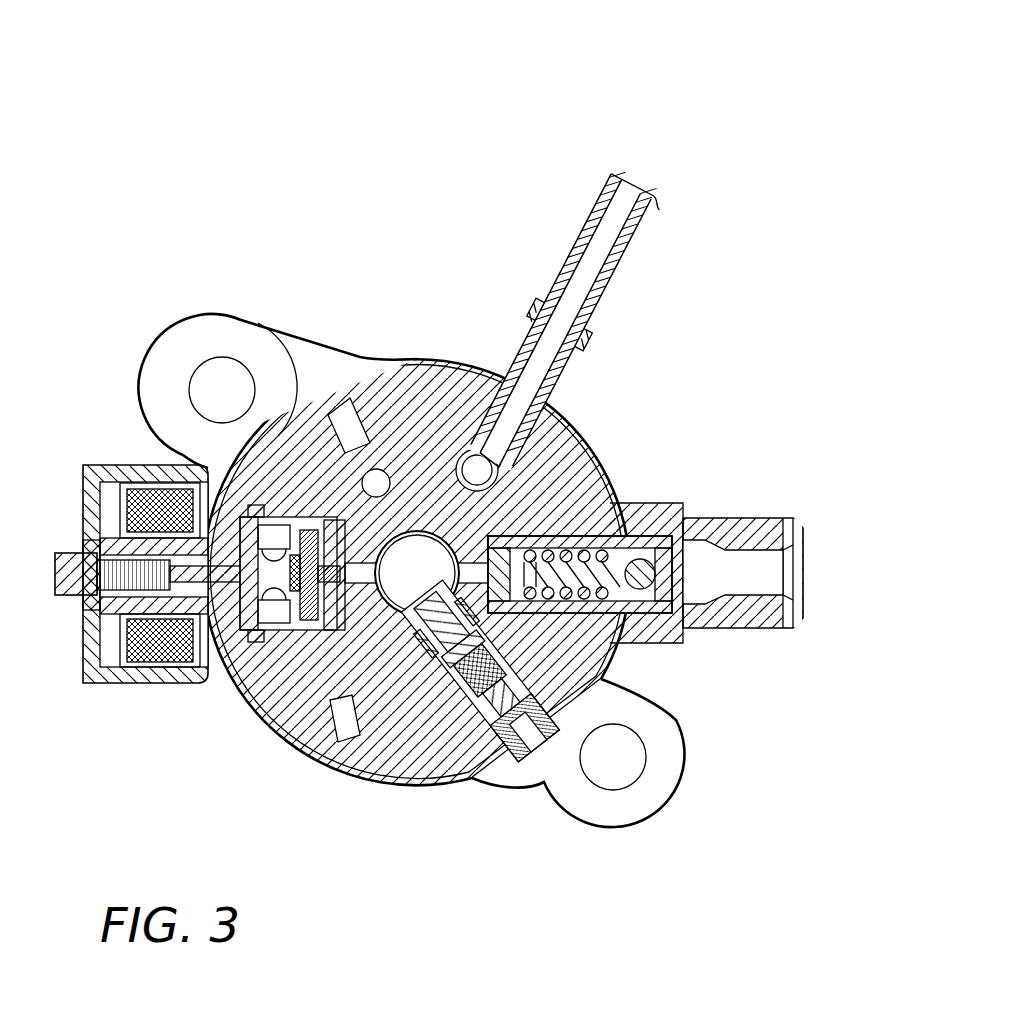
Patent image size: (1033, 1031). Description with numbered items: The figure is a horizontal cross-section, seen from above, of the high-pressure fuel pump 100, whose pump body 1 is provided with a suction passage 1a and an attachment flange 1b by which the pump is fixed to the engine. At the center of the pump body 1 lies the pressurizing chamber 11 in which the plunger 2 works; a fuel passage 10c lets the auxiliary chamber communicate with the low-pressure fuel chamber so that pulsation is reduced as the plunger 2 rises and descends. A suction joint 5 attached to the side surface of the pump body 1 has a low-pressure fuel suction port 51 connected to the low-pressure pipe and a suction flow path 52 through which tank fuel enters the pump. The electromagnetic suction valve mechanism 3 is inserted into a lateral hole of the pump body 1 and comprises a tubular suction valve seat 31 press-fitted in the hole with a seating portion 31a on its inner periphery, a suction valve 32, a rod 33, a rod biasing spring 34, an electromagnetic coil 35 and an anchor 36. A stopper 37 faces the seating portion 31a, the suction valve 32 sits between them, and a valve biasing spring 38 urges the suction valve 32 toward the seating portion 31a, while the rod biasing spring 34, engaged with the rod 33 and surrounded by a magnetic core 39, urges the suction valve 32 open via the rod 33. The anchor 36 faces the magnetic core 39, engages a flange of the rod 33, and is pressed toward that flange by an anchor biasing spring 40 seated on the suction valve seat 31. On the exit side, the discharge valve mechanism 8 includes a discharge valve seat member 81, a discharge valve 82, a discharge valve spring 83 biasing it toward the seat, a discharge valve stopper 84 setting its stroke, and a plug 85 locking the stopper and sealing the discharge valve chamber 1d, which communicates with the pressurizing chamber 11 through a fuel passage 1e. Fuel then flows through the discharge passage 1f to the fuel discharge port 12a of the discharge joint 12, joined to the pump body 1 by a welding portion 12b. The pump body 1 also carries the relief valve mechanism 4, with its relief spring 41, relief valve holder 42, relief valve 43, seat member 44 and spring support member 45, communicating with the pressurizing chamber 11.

The high-pressure fuel pump 100 is at (622, 88).
The pump body 1 is at (598, 438).
The suction passage 1a is at (345, 470).
The attachment flange 1b is at (210, 332).
The discharge valve chamber 1d is at (432, 786).
The fuel passage 1e is at (382, 784).
The discharge passage 1f is at (668, 772).
The plunger 2 is at (410, 528).
The electromagnetic suction valve mechanism 3 is at (136, 521).
The relief valve mechanism 4 is at (674, 596).
The suction joint 5 is at (600, 232).
The discharge valve mechanism 8 is at (521, 773).
The fuel passage 10c is at (376, 468).
The pressurizing chamber 11 is at (418, 528).
The discharge joint 12 is at (774, 539).
The fuel discharge port 12a is at (790, 570).
The welding portion 12b is at (665, 505).
The suction valve seat 31 is at (305, 635).
The seating portion 31a is at (255, 520).
The suction valve 32 is at (332, 640).
The rod 33 is at (150, 487).
The rod biasing spring 34 is at (58, 572).
The electromagnetic coil 35 is at (150, 665).
The anchor 36 is at (196, 668).
The stopper 37 is at (338, 635).
The valve biasing spring 38 is at (250, 500).
The magnetic core 39 is at (80, 550).
The anchor biasing spring 40 is at (226, 650).
The relief spring 41 is at (600, 612).
The relief valve holder 42 is at (632, 600).
The relief valve 43 is at (648, 592).
The seat member 44 is at (668, 602).
The spring support member 45 is at (560, 615).
The low-pressure fuel suction port 51 is at (655, 180).
The suction flow path 52 is at (588, 302).
The discharge valve seat member 81 is at (446, 626).
The discharge valve 82 is at (479, 670).
The discharge valve spring 83 is at (501, 698).
The discharge valve stopper 84 is at (524, 728).
The plug 85 is at (447, 627).